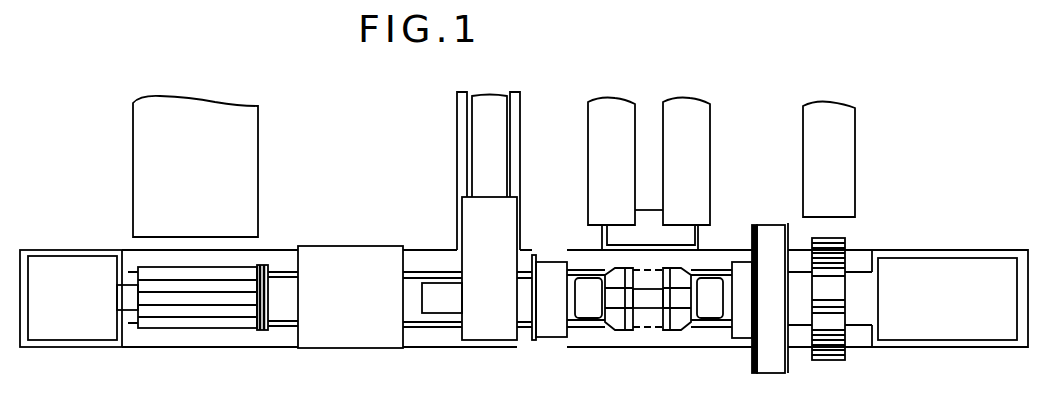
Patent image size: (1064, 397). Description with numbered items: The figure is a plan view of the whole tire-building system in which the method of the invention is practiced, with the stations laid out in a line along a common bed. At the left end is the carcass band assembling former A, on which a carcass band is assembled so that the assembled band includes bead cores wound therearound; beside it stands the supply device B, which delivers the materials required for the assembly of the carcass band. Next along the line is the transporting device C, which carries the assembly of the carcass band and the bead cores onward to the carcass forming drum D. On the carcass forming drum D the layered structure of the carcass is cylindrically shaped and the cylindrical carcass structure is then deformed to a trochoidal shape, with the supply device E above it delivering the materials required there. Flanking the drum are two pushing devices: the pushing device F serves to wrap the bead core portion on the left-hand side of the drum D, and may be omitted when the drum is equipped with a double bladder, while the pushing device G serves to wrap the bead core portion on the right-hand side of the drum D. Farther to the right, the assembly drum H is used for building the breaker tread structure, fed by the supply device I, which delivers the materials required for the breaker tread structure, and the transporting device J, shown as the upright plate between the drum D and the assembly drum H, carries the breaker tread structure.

The carcass band assembling former A is at (200, 337).
The supply device B is at (258, 178).
The transporting device C is at (343, 348).
The carcass forming drum D is at (647, 327).
The supply device E is at (636, 183).
The pushing device F is at (550, 338).
The pushing device G is at (742, 338).
The assembly drum H is at (843, 240).
The supply device I is at (855, 175).
The transporting device J is at (773, 373).